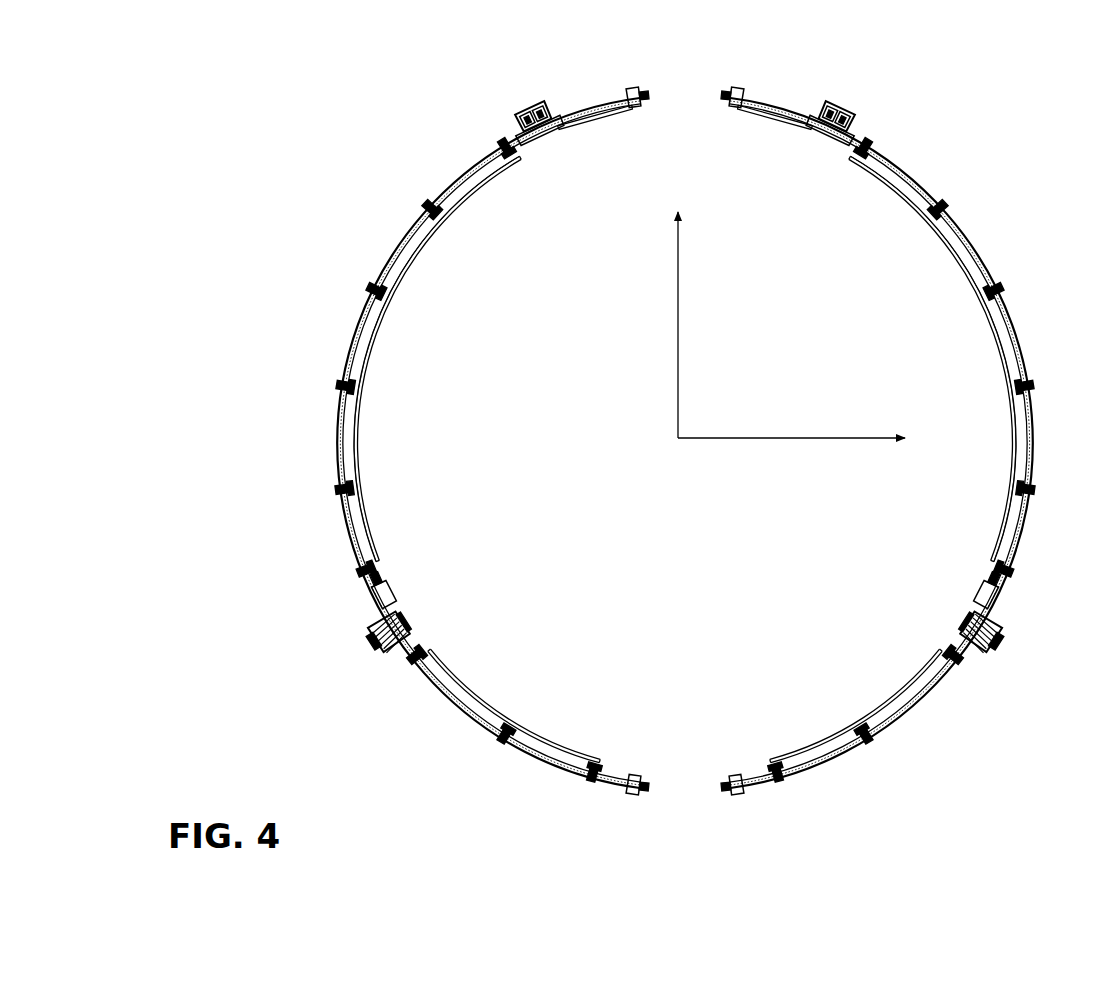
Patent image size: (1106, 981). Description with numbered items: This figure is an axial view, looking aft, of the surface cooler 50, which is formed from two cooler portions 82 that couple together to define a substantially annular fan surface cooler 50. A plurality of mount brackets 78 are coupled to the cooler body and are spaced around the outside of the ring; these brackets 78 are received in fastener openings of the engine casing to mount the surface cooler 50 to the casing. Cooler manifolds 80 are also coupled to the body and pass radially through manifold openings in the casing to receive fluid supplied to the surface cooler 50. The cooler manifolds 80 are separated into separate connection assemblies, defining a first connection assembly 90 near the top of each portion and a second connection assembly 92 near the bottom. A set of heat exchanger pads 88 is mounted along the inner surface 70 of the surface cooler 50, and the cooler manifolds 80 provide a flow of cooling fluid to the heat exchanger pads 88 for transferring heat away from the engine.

The surface cooler 50 is at (398, 68).
The inner surface 70 is at (395, 268).
The mount bracket 78 is at (496, 141).
The cooler manifold 80 is at (527, 106).
The cooler portion 82 is at (396, 243).
The heat exchanger pad 88 is at (425, 229).
The first connection assembly 90 is at (546, 135).
The second connection assembly 92 is at (404, 612).